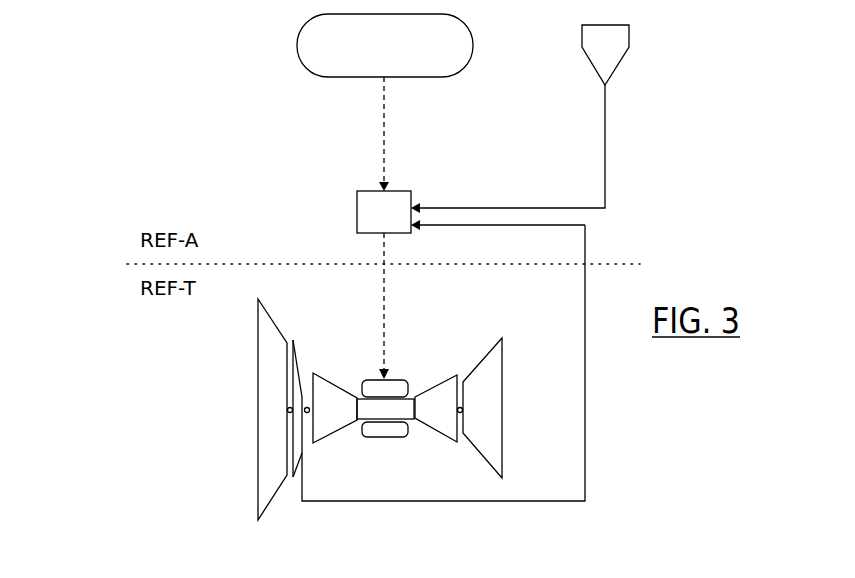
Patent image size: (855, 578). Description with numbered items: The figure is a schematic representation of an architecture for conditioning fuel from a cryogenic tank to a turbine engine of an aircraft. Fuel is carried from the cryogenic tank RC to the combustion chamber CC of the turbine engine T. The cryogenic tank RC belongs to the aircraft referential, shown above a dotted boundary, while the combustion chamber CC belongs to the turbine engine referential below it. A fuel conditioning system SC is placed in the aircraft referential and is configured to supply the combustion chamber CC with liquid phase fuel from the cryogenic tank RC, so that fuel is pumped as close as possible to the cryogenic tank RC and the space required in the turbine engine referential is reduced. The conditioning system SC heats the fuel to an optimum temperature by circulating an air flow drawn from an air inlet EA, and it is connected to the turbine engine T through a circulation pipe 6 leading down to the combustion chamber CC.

The cryogenic tank RC is at (473, 48).
The air inlet EA is at (629, 33).
The fuel conditioning system SC is at (357, 206).
The circulation pipe 6 is at (384, 288).
The turbine engine T is at (371, 372).
The combustion chamber CC is at (402, 437).